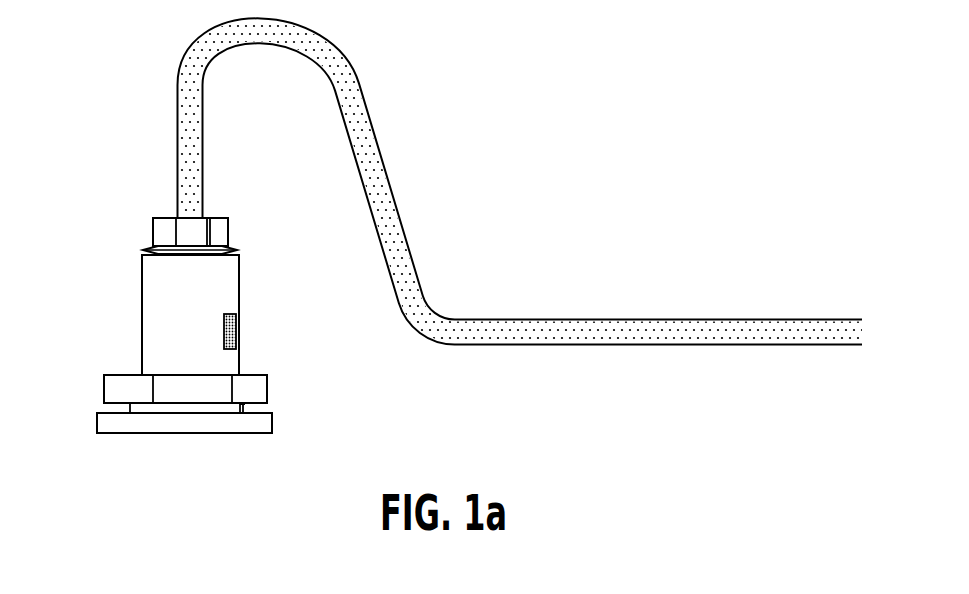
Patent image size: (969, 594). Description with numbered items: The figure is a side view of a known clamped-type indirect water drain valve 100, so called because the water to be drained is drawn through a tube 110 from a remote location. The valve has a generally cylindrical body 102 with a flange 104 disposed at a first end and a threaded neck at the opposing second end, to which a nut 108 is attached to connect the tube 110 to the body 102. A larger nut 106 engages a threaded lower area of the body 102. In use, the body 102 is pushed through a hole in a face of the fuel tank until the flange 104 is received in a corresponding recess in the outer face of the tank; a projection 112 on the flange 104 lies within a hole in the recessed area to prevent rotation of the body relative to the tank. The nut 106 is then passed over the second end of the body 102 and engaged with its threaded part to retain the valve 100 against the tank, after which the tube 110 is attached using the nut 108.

The indirect water drain valve 100 is at (460, 80).
The body 102 is at (239, 277).
The flange 104 is at (97, 423).
The larger nut 106 is at (267, 388).
The nut 108 is at (228, 230).
The tube 110 is at (387, 177).
The projection 112 is at (247, 410).